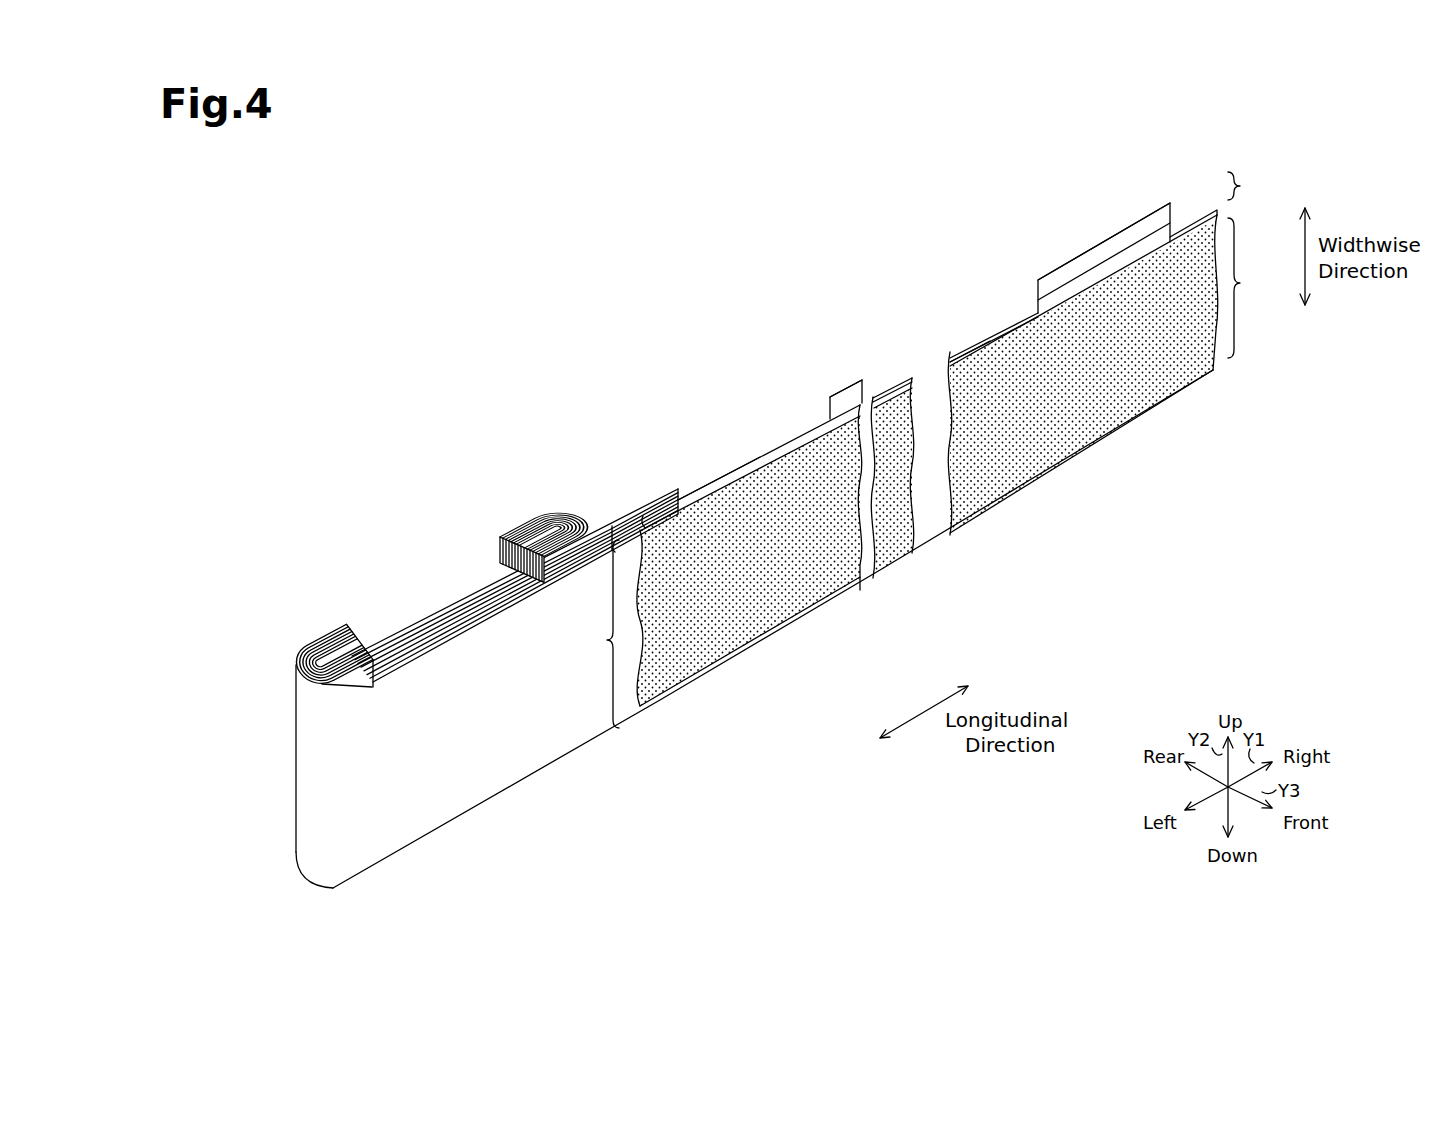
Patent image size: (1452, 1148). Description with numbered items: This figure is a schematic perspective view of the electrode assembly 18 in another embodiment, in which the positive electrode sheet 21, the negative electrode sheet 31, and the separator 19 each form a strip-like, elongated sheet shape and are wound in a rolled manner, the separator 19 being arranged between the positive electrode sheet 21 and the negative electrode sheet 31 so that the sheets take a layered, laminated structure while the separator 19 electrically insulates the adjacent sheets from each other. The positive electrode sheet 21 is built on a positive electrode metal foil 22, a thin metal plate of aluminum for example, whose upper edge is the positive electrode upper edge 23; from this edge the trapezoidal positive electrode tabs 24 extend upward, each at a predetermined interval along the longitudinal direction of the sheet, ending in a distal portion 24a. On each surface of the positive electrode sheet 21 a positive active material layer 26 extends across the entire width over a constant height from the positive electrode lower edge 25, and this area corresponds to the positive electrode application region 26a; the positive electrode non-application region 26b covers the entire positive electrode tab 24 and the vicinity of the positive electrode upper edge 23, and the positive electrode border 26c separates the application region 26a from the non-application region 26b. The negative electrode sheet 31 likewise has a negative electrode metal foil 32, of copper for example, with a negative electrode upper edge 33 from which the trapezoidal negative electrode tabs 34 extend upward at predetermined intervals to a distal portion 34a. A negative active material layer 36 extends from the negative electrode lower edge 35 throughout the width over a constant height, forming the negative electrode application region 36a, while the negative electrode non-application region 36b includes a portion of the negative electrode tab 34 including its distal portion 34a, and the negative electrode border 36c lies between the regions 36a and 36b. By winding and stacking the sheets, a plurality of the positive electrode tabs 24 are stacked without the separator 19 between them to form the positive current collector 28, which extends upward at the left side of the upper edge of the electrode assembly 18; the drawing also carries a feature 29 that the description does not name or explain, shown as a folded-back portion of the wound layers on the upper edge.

The electrode assembly 18 is at (987, 230).
The separator 19 is at (767, 460).
The positive electrode sheet 21 is at (830, 399).
The positive electrode metal foil 22 is at (898, 371).
The positive electrode upper edge 23 is at (972, 350).
The positive electrode tab 24 is at (843, 395).
The distal portion of positive electrode tab 24a is at (853, 383).
The positive electrode lower edge 25 is at (1047, 470).
The positive active material layer 26 is at (1118, 417).
The positive electrode application region 26a is at (1257, 288).
The positive electrode non-application region 26b is at (1257, 185).
The positive electrode border 26c is at (1197, 213).
The positive current collector 28 is at (282, 647).
The folded portion 29 is at (548, 510).
The negative electrode sheet 31 is at (607, 525).
The negative electrode metal foil 32 is at (680, 489).
The negative electrode upper edge 33 is at (728, 470).
The negative electrode tab 34 is at (655, 508).
The distal portion of negative electrode tab 34a is at (612, 542).
The negative electrode lower edge 35 is at (753, 650).
The negative active material layer 36 is at (845, 580).
The negative electrode application region 36a is at (590, 634).
The negative electrode non-application region 36b is at (610, 545).
The negative electrode border 36c is at (643, 530).